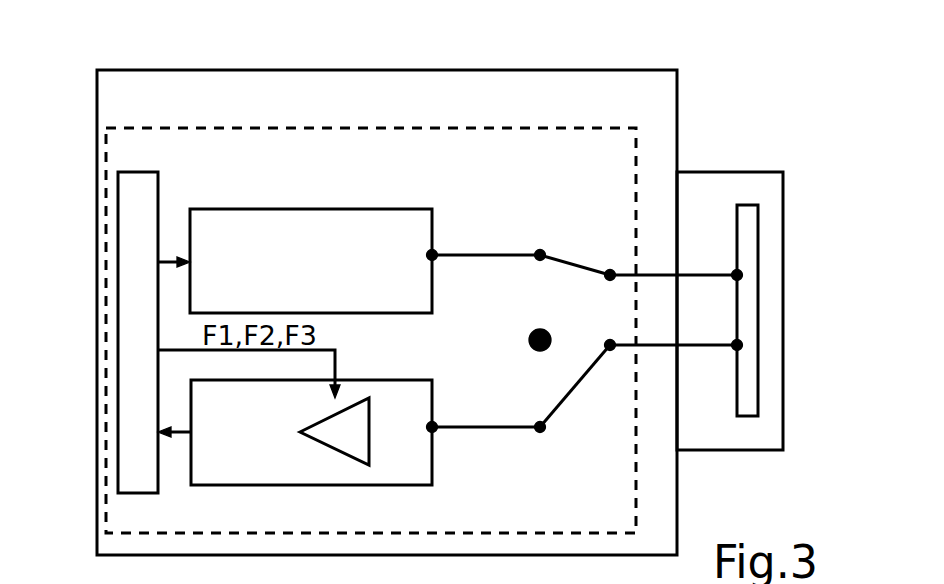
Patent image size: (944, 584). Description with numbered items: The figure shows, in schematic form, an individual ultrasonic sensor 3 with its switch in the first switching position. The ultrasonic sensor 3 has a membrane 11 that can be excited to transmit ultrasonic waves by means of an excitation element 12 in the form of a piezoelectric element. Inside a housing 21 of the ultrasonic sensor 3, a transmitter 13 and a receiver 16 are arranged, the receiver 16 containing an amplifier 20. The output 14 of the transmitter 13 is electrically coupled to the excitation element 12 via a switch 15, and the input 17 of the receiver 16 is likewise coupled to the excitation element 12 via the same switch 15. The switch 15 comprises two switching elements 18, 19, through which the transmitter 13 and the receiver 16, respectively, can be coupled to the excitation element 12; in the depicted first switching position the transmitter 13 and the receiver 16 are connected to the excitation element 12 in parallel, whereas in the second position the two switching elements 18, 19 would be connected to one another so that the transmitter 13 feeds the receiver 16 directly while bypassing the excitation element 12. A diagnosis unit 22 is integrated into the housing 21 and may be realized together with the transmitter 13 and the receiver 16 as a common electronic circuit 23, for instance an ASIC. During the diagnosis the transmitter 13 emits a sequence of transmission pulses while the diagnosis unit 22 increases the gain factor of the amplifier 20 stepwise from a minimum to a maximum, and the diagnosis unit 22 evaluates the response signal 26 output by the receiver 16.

The ultrasonic sensor 3 is at (240, 70).
The housing 21 is at (373, 70).
The common electronic circuit 23 is at (555, 128).
The diagnosis unit 22 is at (128, 218).
The transmitter 13 is at (340, 209).
The receiver 16 is at (385, 380).
The amplifier 20 is at (332, 448).
The response signal 26 is at (183, 436).
The output 14 is at (436, 252).
The input 17 is at (436, 424).
The switch 15 is at (598, 255).
The switching element 18 is at (566, 264).
The switching element 19 is at (568, 396).
The membrane 11 is at (783, 375).
The excitation element 12 is at (748, 237).